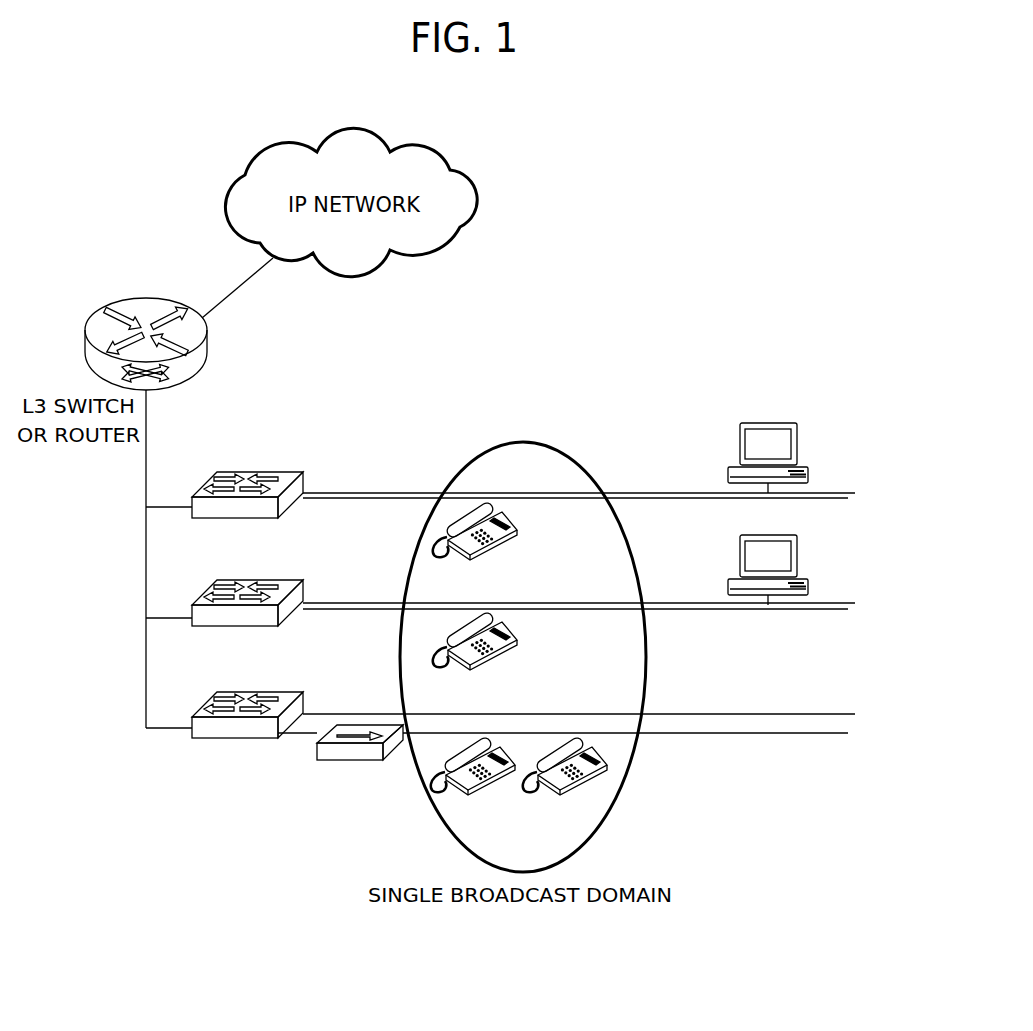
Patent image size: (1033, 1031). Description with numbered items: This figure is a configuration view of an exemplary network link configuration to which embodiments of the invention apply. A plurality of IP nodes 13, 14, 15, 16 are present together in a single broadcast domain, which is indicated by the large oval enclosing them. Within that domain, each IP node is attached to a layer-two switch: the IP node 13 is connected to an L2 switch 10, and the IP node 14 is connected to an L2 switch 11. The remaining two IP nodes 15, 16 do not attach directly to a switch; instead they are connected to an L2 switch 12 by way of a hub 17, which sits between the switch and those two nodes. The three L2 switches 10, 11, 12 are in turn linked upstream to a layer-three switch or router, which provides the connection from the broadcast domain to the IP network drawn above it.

The L2 switch 10 is at (291, 476).
The L2 switch 11 is at (296, 583).
The L2 switch 12 is at (300, 693).
The IP node 13 is at (513, 531).
The IP node 14 is at (513, 643).
The IP node 15 is at (428, 778).
The IP node 16 is at (604, 765).
The hub 17 is at (320, 760).